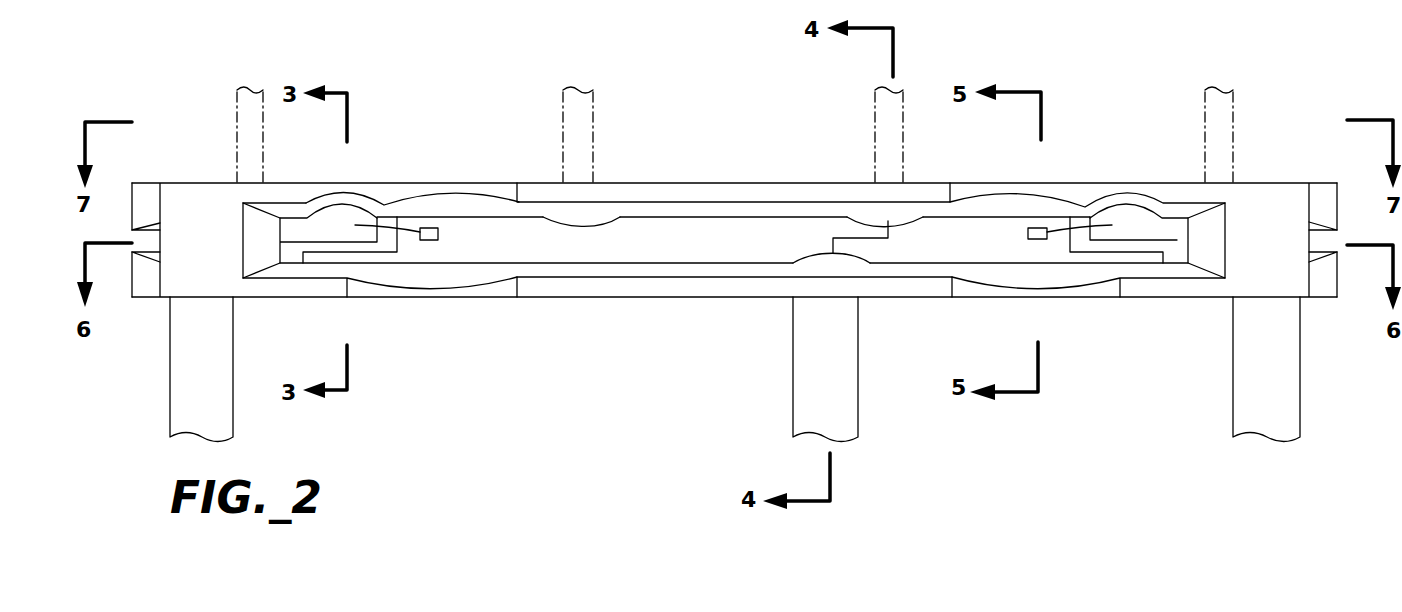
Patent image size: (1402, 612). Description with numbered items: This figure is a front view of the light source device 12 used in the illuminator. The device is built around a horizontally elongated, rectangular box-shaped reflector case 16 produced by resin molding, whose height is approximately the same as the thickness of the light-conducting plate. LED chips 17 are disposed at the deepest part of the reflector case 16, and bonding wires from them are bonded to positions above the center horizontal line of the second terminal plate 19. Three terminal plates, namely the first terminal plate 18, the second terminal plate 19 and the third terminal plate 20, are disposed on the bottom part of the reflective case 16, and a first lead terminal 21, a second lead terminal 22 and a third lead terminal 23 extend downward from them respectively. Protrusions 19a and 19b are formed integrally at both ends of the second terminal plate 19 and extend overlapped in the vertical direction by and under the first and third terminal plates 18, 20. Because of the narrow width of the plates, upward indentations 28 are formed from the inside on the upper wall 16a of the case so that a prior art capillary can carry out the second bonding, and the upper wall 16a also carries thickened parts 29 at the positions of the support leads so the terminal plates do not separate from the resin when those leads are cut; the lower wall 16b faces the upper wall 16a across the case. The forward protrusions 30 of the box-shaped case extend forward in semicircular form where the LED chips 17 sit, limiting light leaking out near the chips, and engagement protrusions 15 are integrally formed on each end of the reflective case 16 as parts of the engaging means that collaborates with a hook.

The light source device 12 is at (749, 140).
The engagement protrusions 15 is at (132, 198).
The reflector case 16 is at (540, 181).
The upper wall 16a is at (782, 187).
The lower housing wall 16b is at (655, 293).
The LED chips 17 is at (430, 241).
The first terminal plate 18 is at (302, 223).
The second terminal plate 19 is at (643, 228).
The protrusion 19a is at (325, 257).
The protrusion 19b is at (1142, 258).
The third terminal plate 20 is at (1147, 222).
The first lead terminal 21 is at (170, 412).
The second lead terminal 22 is at (792, 413).
The third lead terminal 23 is at (1233, 422).
The upward indentations 28 is at (352, 200).
The thickened parts 29 is at (597, 212).
The forward protrusions 30 is at (448, 190).